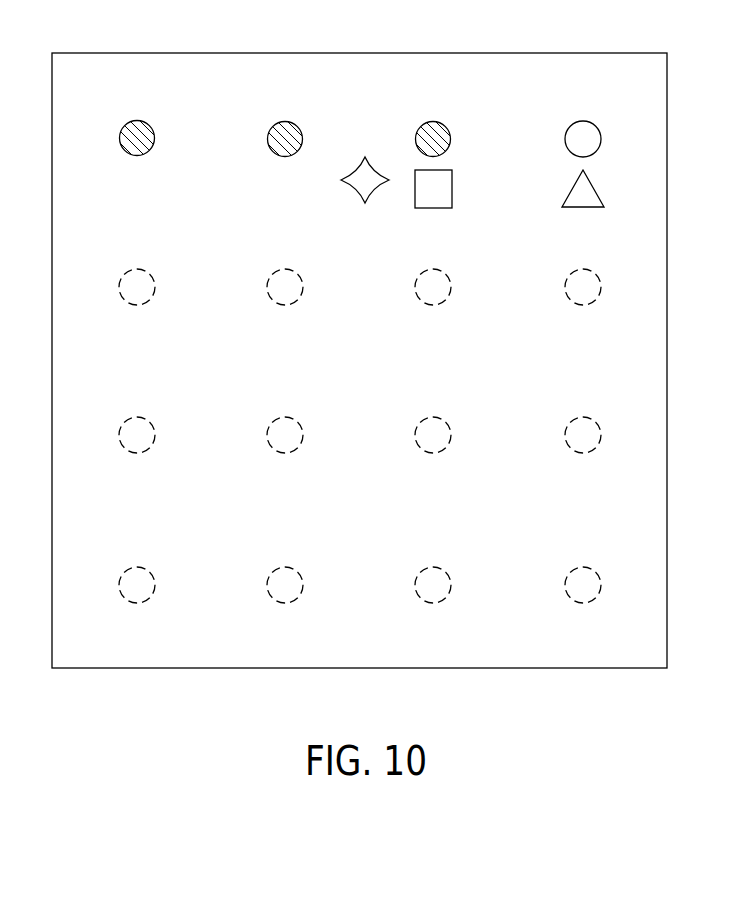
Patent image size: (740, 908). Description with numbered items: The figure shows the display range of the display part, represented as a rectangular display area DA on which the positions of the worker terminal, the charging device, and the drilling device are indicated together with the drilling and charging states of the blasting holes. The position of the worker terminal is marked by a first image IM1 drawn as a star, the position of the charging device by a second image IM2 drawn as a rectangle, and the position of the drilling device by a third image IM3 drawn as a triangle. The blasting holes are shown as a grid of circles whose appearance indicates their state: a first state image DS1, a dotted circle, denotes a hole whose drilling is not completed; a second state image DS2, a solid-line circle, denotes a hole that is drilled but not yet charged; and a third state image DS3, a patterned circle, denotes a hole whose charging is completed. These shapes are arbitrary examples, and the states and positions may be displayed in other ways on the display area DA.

The display area DA is at (433, 53).
The first state image DS1 is at (146, 270).
The second state image DS2 is at (565, 130).
The third state image DS3 is at (298, 127).
The first image IM1 is at (351, 195).
The second image IM2 is at (453, 190).
The third image IM3 is at (582, 209).